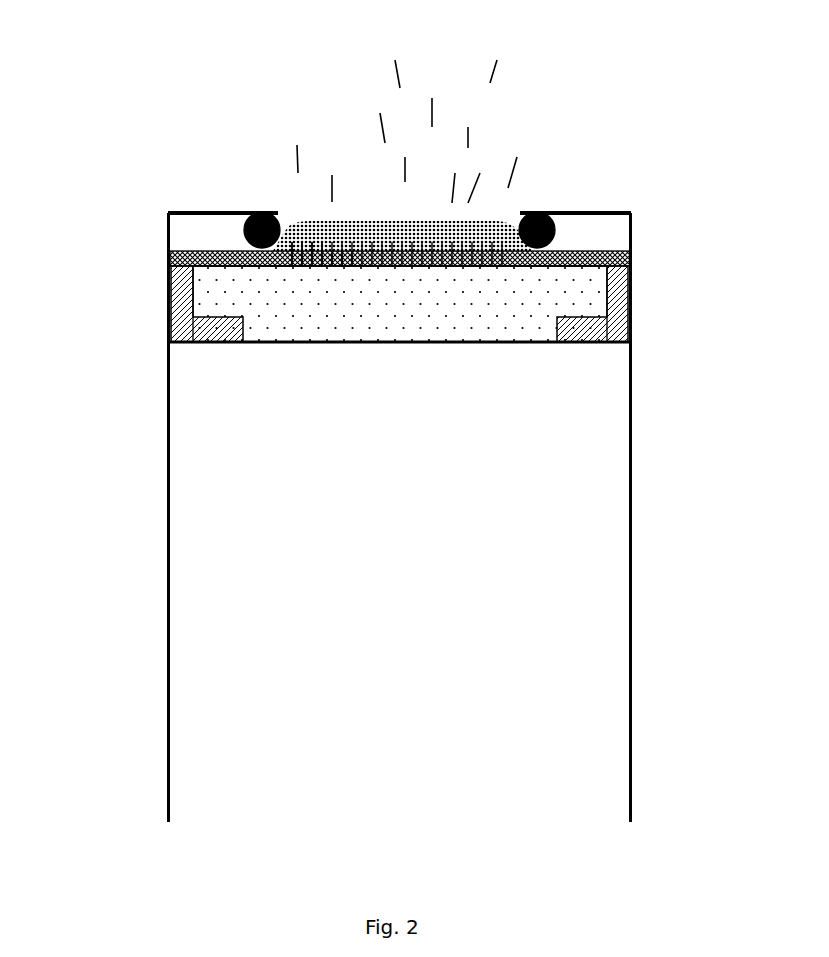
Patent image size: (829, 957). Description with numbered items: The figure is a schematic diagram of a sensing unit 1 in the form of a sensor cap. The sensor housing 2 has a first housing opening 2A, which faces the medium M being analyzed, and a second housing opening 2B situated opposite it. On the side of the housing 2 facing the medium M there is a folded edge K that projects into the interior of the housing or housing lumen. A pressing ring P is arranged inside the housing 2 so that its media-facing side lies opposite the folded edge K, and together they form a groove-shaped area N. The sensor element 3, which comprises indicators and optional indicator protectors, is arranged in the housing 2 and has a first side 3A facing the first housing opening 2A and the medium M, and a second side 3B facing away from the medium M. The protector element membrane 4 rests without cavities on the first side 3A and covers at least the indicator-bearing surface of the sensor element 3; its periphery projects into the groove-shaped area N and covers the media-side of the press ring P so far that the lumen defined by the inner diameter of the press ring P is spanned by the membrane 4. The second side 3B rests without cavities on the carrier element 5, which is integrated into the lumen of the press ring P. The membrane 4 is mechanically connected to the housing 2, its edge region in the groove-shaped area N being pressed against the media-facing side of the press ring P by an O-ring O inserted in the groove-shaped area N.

The sensing unit 1 is at (138, 689).
The housing 2 is at (168, 522).
The first housing opening 2A is at (488, 205).
The second housing opening 2B is at (512, 798).
The sensor element 3 is at (357, 252).
The first side of sensor element 3A is at (318, 242).
The second side of sensor element 3B is at (335, 267).
The protector element membrane 4 is at (404, 221).
The carrier element 5 is at (213, 293).
The O-ring O is at (245, 228).
The folded edge K is at (597, 213).
The groove-shaped area N is at (608, 235).
The pressing ring P is at (630, 300).
The medium M is at (488, 172).